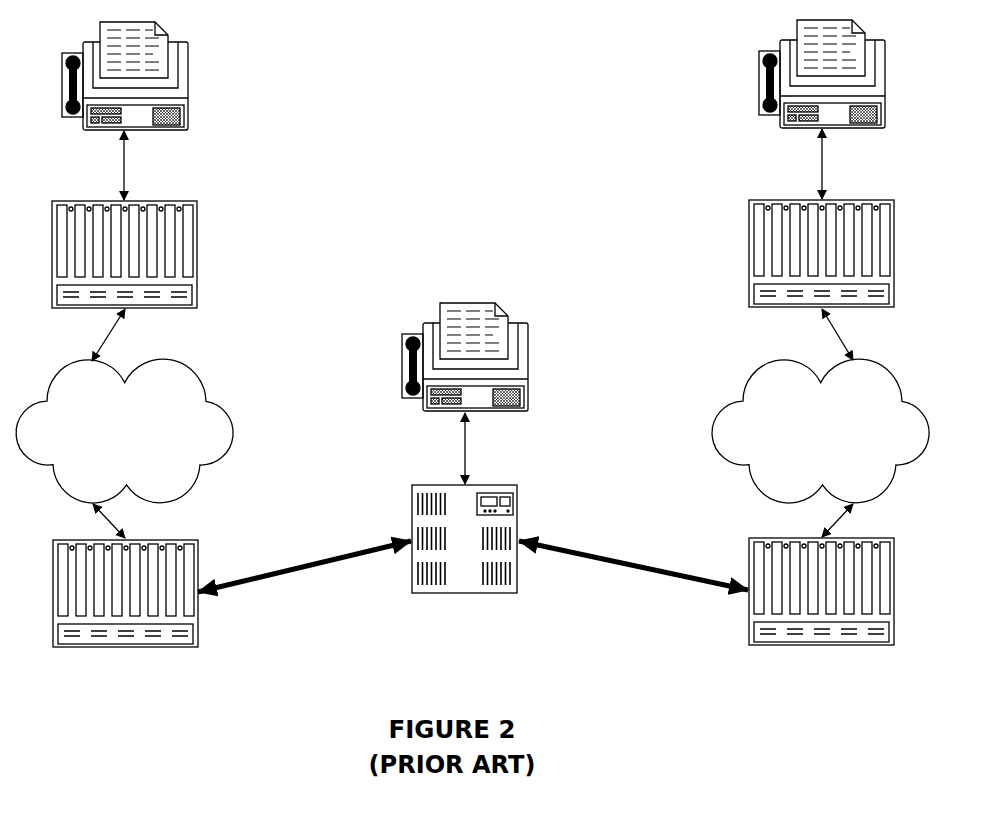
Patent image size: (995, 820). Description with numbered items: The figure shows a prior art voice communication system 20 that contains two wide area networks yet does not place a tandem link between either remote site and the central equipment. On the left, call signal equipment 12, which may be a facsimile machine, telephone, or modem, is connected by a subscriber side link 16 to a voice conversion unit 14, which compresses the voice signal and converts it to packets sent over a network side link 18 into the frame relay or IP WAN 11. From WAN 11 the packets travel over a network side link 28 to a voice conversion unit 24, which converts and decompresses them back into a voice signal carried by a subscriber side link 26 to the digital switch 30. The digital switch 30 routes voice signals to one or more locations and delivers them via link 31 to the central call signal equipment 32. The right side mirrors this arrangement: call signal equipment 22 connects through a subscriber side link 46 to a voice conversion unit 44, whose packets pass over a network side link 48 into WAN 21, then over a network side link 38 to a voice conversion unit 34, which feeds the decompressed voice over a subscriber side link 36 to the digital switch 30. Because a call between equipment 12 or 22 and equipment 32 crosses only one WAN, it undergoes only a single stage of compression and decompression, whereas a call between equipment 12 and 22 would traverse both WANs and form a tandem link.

The voice communication system 20 is at (446, 76).
The call signal equipment 12 is at (189, 75).
The subscriber side link 16 is at (128, 171).
The voice conversion unit 14 is at (199, 251).
The network side link 18 is at (107, 335).
The WAN 11 is at (234, 433).
The network side link 28 is at (110, 527).
The voice conversion unit 24 is at (125, 650).
The subscriber side link 26 is at (304, 563).
The call signal equipment 32 is at (401, 357).
The link 31 is at (462, 461).
The digital switch 30 is at (465, 594).
The subscriber side link 36 is at (634, 562).
The call signal equipment 22 is at (758, 73).
The subscriber side link 46 is at (819, 173).
The voice conversion unit 44 is at (748, 255).
The network side link 48 is at (840, 333).
The WAN 21 is at (713, 432).
The network side link 38 is at (830, 522).
The voice conversion unit 34 is at (821, 650).